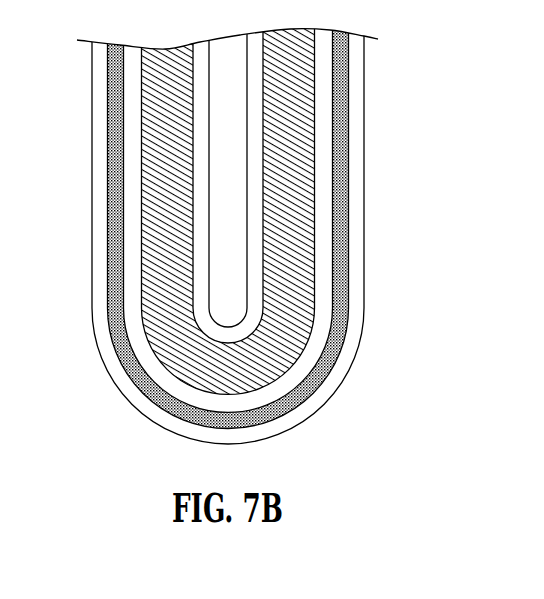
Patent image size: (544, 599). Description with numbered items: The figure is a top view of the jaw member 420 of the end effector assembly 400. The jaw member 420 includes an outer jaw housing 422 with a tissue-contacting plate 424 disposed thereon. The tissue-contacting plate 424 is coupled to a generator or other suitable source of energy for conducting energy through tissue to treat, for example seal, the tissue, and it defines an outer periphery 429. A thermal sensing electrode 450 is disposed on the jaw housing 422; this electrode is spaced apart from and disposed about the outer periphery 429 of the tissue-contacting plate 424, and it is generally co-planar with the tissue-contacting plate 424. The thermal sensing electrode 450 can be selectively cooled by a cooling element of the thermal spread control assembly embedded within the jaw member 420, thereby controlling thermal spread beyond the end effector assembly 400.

The end effector assembly 400 is at (249, 242).
The jaw member 420 is at (382, 213).
The outer jaw housing 422 is at (98, 268).
The tissue-contacting plate 424 is at (180, 213).
The outer periphery 429 is at (131, 316).
The thermal sensing electrode 450 is at (288, 412).